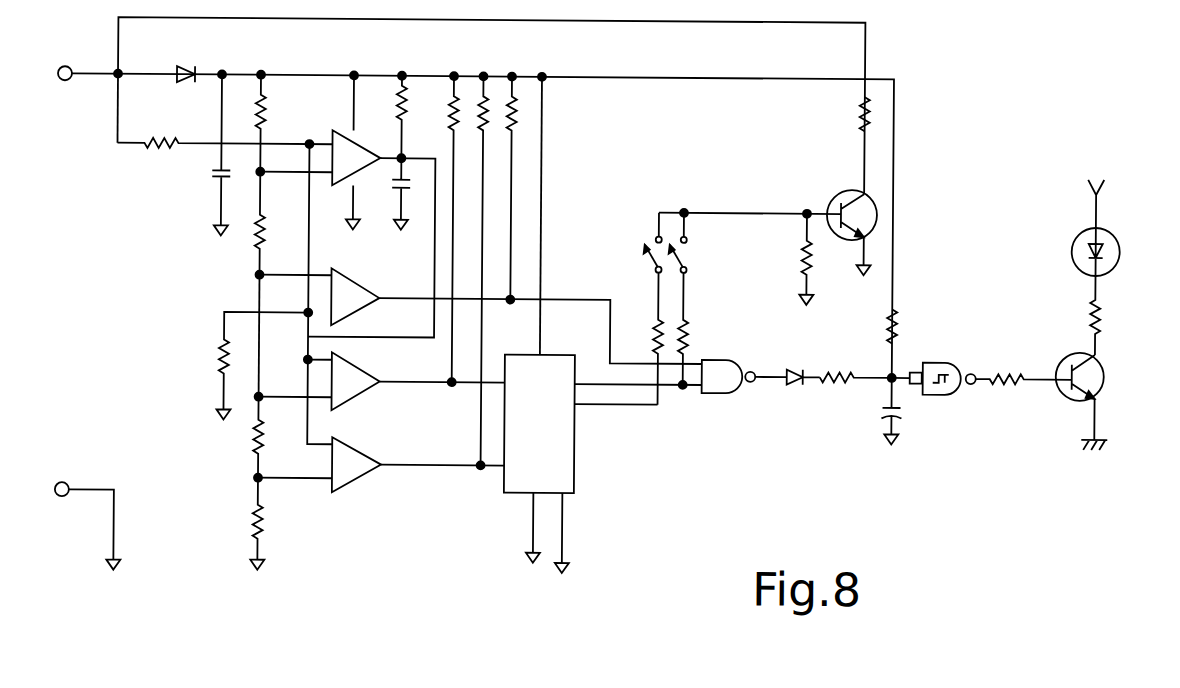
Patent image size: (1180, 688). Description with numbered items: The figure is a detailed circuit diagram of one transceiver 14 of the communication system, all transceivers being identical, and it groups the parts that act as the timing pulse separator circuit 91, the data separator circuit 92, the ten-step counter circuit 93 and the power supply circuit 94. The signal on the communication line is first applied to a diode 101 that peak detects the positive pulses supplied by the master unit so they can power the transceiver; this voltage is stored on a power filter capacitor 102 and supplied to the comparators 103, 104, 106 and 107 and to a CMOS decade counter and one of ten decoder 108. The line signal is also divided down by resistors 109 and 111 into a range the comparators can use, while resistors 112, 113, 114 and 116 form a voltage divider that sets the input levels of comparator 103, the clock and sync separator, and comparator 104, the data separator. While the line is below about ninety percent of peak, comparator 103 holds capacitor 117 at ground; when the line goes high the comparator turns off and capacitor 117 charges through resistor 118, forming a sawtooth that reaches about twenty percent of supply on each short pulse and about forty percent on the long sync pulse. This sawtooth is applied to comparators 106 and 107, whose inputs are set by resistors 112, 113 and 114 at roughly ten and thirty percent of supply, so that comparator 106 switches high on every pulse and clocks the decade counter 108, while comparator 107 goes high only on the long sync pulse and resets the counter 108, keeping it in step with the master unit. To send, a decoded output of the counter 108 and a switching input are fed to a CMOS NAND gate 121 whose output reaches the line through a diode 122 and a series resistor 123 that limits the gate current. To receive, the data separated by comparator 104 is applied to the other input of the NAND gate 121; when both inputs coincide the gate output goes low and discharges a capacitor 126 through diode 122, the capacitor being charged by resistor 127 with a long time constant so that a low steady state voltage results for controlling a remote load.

The transceiver unit 14 is at (968, 104).
The timing pulse separator circuit 91 is at (353, 497).
The data separator circuit 92 is at (305, 328).
The ten-step counter circuit 93 is at (588, 498).
The power supply circuit 94 is at (258, 60).
The diode 101 is at (187, 70).
The power filter capacitor 102 is at (242, 180).
The comparator 103 is at (338, 134).
The comparator 104 is at (357, 275).
The comparator 106 is at (370, 482).
The comparator 107 is at (372, 398).
The CMOS decade counter and one of ten decoder 108 is at (578, 454).
The resistor 109 is at (163, 140).
The resistor 111 is at (240, 358).
The resistor 112 is at (253, 522).
The resistor 113 is at (254, 445).
The resistor 114 is at (257, 250).
The resistor 116 is at (259, 108).
The capacitor 117 is at (390, 184).
The resistor 118 is at (410, 82).
The CMOS NAND gate 121 is at (748, 362).
The diode 122 is at (797, 365).
The series resistor 123 is at (840, 367).
The capacitor 126 is at (885, 423).
The resistor 127 is at (890, 316).